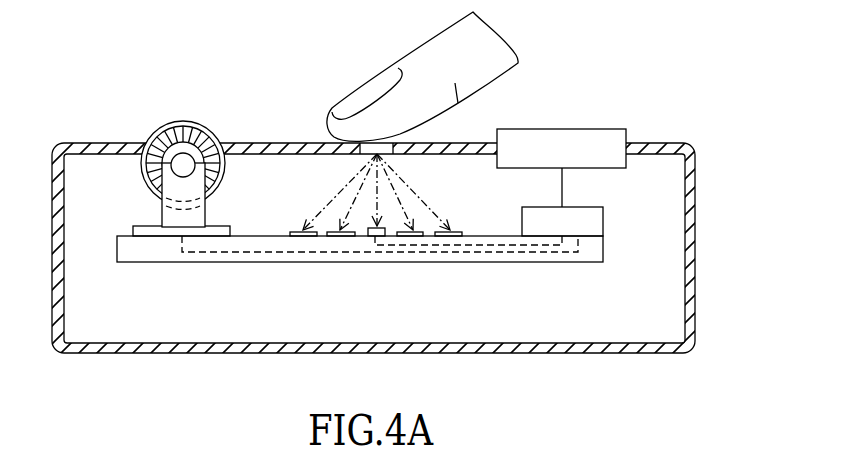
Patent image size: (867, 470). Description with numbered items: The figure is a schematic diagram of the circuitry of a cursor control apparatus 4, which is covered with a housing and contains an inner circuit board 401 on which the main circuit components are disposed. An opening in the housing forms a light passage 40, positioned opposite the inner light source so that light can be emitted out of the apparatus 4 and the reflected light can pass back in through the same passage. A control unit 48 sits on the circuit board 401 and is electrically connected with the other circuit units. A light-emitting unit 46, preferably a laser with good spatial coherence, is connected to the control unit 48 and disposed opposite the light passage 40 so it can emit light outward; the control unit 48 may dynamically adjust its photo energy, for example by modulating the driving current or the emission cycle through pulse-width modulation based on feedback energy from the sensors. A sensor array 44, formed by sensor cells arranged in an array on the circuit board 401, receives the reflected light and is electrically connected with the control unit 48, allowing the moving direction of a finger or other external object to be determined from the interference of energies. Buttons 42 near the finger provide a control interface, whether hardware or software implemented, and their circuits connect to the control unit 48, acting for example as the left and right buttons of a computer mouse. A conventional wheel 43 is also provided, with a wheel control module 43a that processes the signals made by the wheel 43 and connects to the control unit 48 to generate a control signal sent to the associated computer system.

The cursor control apparatus 4 is at (137, 348).
The light passage 40 is at (367, 147).
The buttons 42 is at (572, 135).
The wheel 43 is at (165, 132).
The wheel control module 43a is at (170, 232).
The circuit board 401 is at (138, 253).
The sensor array 44 is at (300, 237).
The light-emitting unit 46 is at (375, 237).
The control unit 48 is at (587, 218).